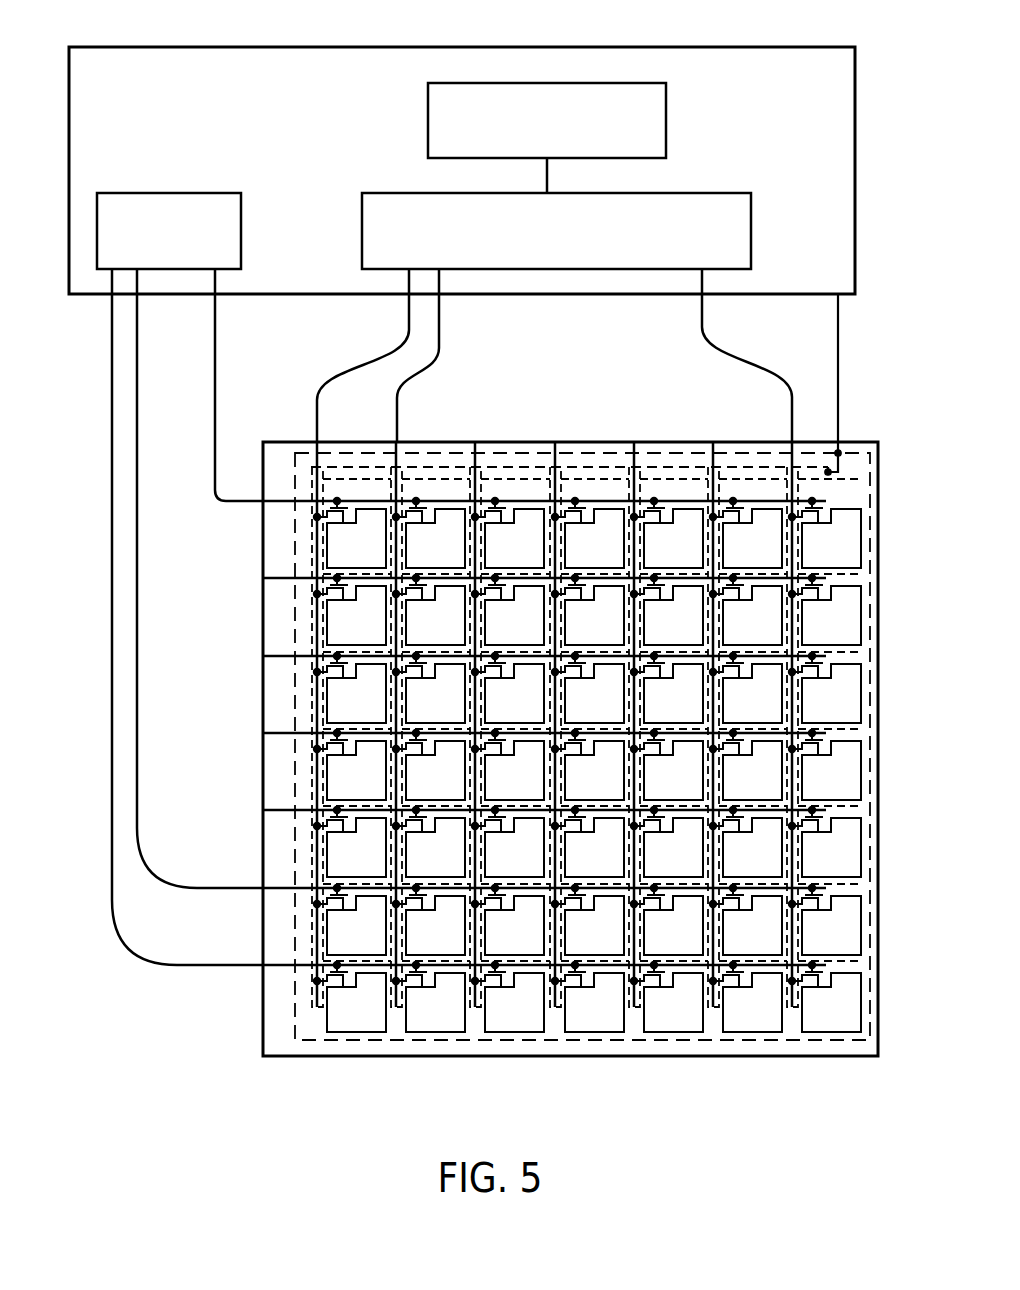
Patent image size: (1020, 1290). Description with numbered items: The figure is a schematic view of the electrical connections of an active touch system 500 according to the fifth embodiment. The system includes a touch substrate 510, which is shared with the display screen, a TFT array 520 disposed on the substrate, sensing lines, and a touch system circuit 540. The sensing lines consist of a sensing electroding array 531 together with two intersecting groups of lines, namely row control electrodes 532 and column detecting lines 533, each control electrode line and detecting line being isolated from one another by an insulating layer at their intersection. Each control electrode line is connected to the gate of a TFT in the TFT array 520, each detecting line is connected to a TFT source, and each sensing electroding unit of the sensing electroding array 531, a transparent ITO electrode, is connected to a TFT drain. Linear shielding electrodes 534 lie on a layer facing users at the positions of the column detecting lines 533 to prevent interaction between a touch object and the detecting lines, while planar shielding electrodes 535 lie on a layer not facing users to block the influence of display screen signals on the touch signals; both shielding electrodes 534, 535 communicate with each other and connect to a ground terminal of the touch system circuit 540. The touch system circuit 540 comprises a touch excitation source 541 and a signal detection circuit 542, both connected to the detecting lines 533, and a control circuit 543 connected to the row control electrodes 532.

The active touch system 500 is at (473, 559).
The touch substrate 510 is at (263, 1056).
The TFT array 520 is at (331, 981).
The sensing electroding array 531 is at (356, 1031).
The row control electrodes 532 is at (222, 753).
The column detecting lines 533 is at (673, 409).
The linear shielding electrodes 534 is at (790, 1007).
The planar shielding electrodes 535 is at (868, 1040).
The touch system circuit 540 is at (462, 170).
The touch excitation source 541 is at (547, 138).
The signal detection circuit 542 is at (554, 317).
The control circuit 543 is at (180, 579).